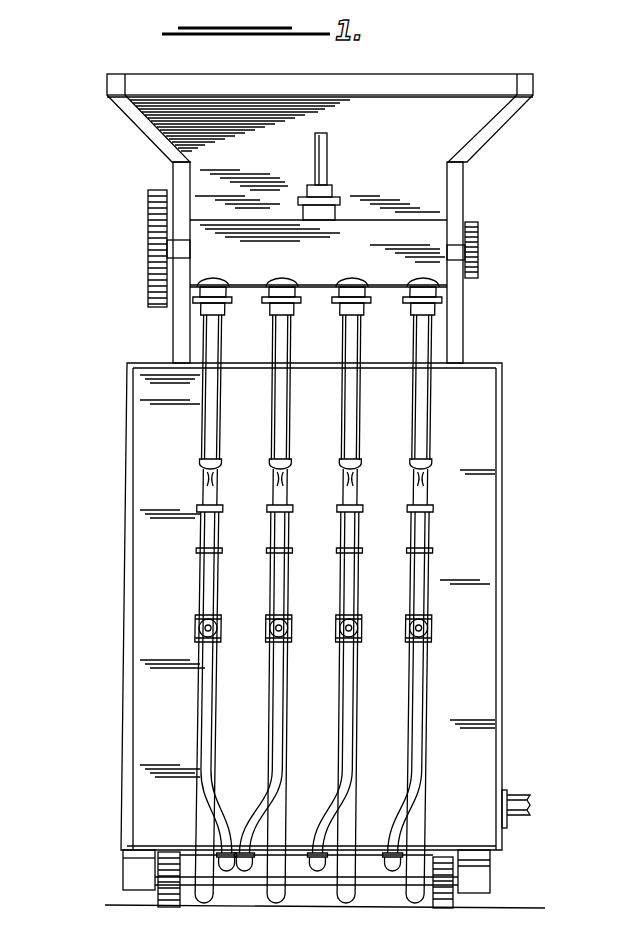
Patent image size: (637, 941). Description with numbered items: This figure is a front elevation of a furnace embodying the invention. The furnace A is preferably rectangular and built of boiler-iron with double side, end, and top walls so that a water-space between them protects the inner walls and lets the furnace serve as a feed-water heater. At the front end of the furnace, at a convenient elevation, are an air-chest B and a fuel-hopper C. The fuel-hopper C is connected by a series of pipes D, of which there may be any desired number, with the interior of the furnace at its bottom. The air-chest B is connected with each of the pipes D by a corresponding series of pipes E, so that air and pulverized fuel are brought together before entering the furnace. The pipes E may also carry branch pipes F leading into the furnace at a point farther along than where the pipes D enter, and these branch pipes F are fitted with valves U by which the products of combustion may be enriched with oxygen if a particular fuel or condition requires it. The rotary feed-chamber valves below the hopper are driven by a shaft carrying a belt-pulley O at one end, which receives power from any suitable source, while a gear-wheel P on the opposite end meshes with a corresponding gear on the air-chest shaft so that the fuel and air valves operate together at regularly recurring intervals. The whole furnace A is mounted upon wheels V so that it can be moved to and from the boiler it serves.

The furnace A is at (124, 604).
The air-chest B is at (318, 262).
The fuel-hopper C is at (320, 147).
The pipes D is at (326, 369).
The pipes E is at (210, 390).
The branch pipes F is at (198, 702).
The valves U is at (195, 627).
The belt-pulley O is at (148, 258).
The gear-wheel P is at (480, 258).
The wheels V is at (168, 907).